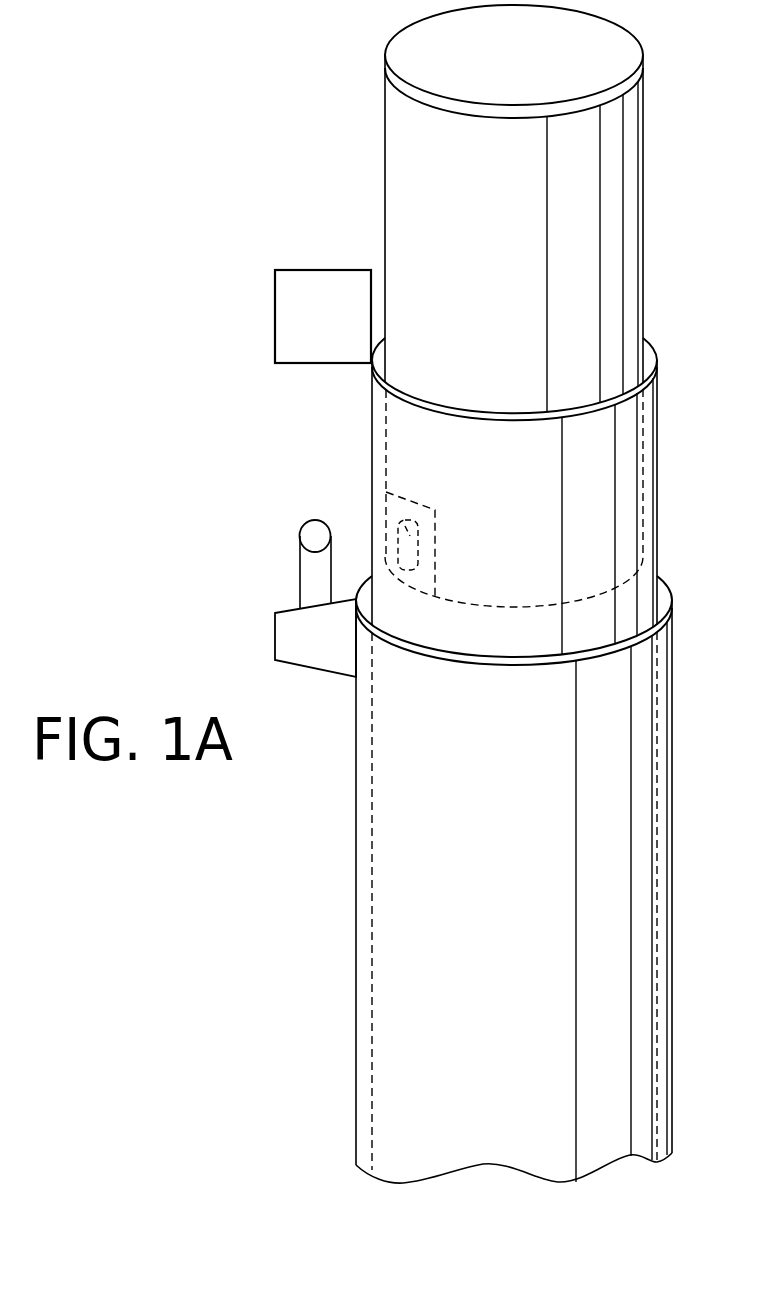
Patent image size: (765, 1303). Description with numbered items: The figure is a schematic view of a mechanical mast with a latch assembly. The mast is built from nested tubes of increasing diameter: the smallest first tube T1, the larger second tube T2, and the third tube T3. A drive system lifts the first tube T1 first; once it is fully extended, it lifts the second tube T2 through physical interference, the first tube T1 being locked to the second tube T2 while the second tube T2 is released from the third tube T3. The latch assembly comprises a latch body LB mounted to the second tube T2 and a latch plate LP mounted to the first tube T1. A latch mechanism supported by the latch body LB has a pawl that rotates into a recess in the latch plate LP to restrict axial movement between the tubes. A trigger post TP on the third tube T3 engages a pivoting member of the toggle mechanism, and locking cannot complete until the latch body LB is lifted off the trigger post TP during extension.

The first tube T1 is at (415, 190).
The second tube T2 is at (400, 608).
The third tube T3 is at (394, 962).
The latch body LB is at (300, 288).
The latch plate LP is at (400, 518).
The trigger post TP is at (288, 622).